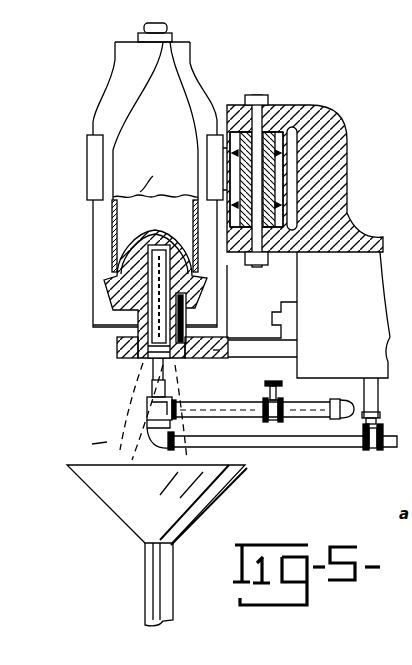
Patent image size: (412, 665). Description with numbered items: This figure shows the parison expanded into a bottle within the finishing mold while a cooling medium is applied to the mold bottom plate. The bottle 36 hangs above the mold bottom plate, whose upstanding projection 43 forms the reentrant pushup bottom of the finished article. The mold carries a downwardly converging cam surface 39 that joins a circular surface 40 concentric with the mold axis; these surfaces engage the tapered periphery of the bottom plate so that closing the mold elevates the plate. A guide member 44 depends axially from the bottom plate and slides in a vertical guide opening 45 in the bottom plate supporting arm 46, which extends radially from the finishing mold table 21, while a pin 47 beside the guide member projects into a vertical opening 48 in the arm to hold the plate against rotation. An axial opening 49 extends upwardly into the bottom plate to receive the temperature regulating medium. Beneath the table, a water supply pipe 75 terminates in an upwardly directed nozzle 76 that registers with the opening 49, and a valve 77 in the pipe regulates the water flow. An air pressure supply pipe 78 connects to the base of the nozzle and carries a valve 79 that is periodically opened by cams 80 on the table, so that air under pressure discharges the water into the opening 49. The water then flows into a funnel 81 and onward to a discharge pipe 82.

The bottle 36 is at (188, 70).
The upstanding projection 43 is at (156, 243).
The circular surface 40 is at (200, 285).
The downwardly converging cam surface 39 is at (186, 305).
The pin 47 is at (184, 319).
The axial opening 49 is at (152, 282).
The guide member 44 is at (142, 320).
The vertical guide opening 45 is at (153, 365).
The nozzle 76 is at (150, 372).
The vertical opening 48 is at (182, 357).
The bottom plate supporting arm 46 is at (215, 355).
The water supply pipe 75 is at (233, 404).
The valve 77 is at (283, 395).
The finishing mold table 21 is at (367, 297).
The cams 80 is at (373, 393).
The valve 79 is at (377, 430).
The air pressure supply pipe 78 is at (296, 443).
The funnel 81 is at (107, 495).
The discharge pipe 82 is at (150, 563).